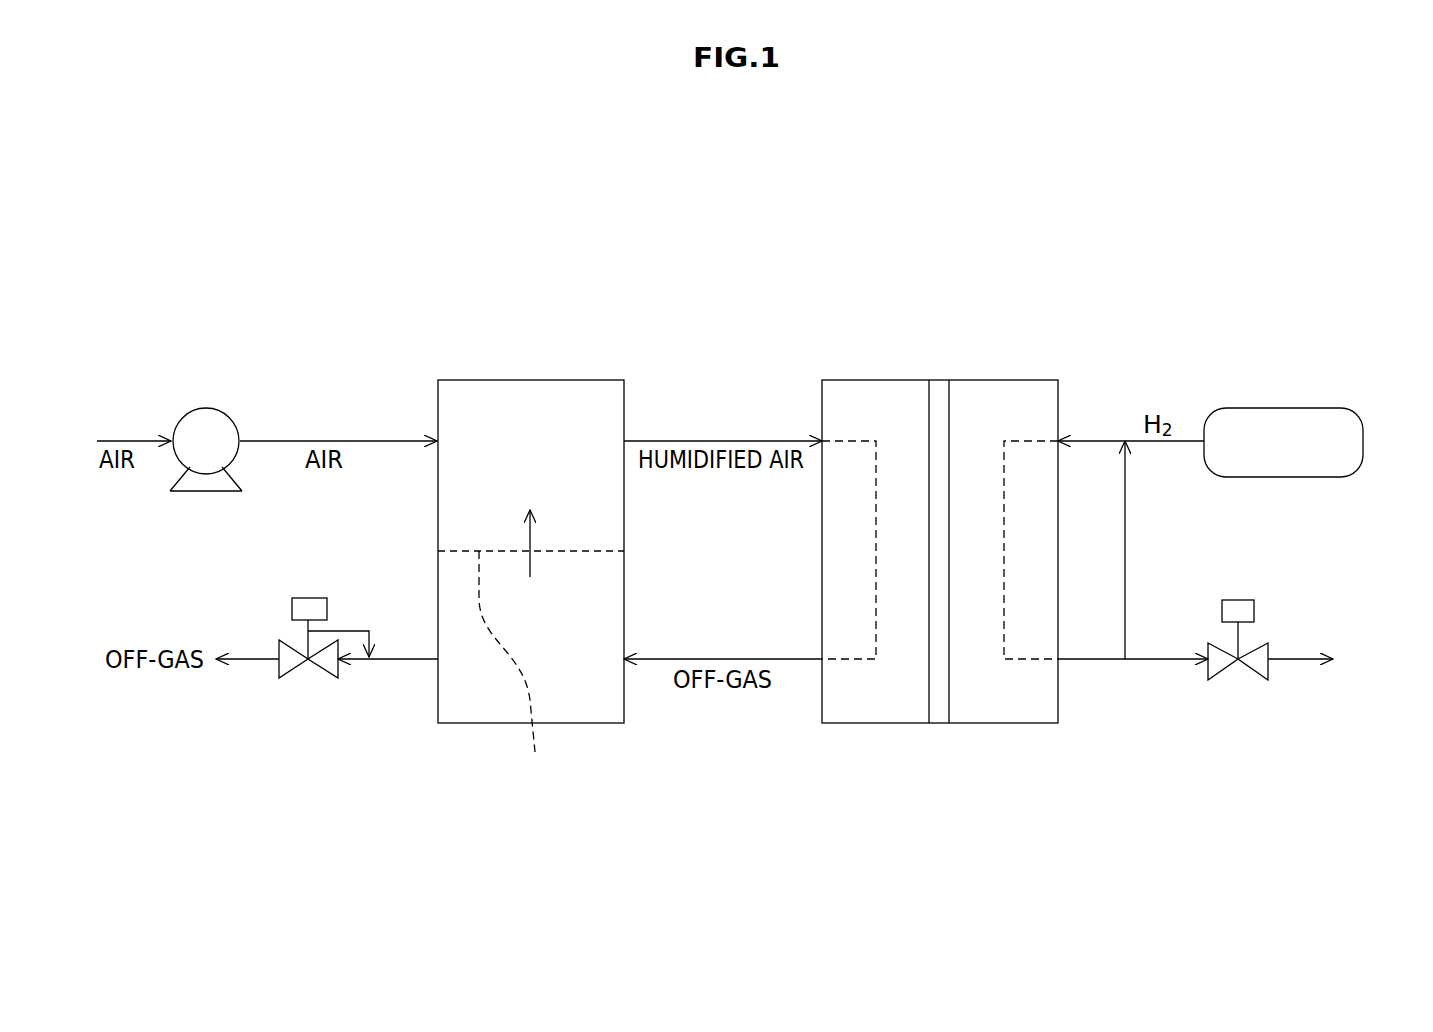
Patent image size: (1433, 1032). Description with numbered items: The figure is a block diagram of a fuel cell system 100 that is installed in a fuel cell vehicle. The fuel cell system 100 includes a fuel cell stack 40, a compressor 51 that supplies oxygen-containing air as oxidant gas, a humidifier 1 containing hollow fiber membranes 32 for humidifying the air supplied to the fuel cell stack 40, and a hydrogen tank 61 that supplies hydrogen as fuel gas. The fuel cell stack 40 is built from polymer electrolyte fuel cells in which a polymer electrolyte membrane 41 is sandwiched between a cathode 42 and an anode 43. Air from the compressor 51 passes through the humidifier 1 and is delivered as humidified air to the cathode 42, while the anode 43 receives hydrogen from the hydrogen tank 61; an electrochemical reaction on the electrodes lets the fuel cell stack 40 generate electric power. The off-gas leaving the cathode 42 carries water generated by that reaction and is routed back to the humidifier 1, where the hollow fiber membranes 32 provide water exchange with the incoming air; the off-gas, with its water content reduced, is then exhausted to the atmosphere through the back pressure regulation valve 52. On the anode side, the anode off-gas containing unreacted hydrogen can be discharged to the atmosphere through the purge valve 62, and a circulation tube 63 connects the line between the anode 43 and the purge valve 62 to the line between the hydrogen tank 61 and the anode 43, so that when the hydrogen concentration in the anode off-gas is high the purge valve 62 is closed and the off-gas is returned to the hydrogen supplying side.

The fuel cell system 100 is at (840, 192).
The humidifier 1 is at (470, 380).
The hollow fiber membrane 32 is at (596, 685).
The fuel cell stack 40 is at (1018, 222).
The polymer electrolyte membrane 41 is at (938, 380).
The cathode 42 is at (830, 380).
The anode 43 is at (1012, 380).
The compressor 51 is at (208, 408).
The back pressure regulation valve 52 is at (308, 598).
The hydrogen tank 61 is at (1230, 408).
The purge valve 62 is at (1238, 600).
The circulation tube 63 is at (1125, 548).